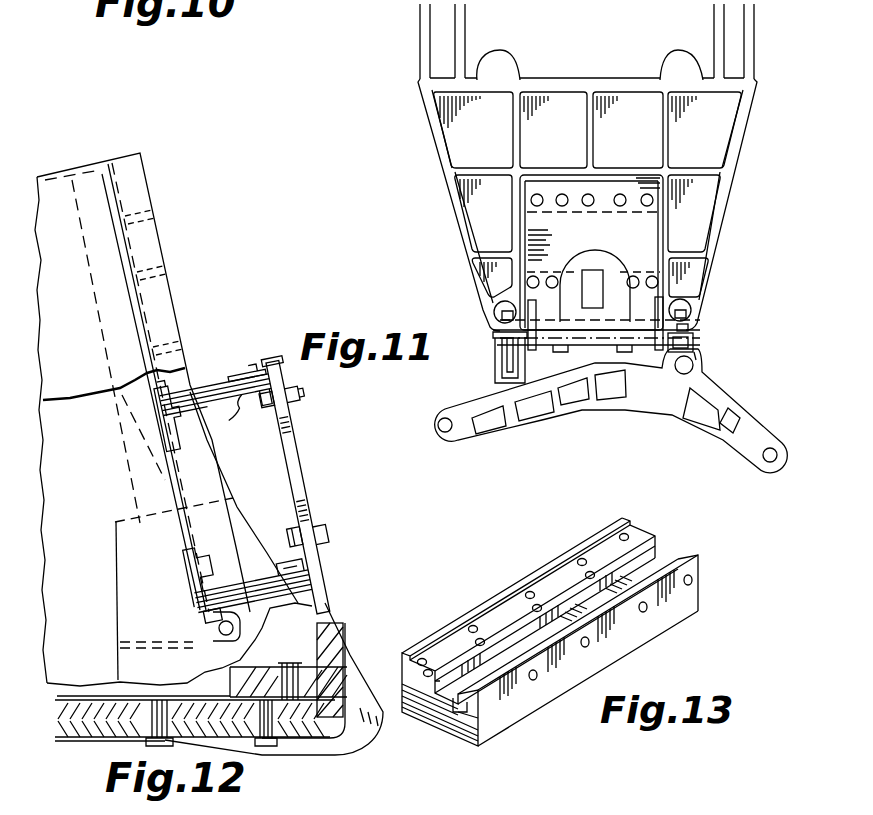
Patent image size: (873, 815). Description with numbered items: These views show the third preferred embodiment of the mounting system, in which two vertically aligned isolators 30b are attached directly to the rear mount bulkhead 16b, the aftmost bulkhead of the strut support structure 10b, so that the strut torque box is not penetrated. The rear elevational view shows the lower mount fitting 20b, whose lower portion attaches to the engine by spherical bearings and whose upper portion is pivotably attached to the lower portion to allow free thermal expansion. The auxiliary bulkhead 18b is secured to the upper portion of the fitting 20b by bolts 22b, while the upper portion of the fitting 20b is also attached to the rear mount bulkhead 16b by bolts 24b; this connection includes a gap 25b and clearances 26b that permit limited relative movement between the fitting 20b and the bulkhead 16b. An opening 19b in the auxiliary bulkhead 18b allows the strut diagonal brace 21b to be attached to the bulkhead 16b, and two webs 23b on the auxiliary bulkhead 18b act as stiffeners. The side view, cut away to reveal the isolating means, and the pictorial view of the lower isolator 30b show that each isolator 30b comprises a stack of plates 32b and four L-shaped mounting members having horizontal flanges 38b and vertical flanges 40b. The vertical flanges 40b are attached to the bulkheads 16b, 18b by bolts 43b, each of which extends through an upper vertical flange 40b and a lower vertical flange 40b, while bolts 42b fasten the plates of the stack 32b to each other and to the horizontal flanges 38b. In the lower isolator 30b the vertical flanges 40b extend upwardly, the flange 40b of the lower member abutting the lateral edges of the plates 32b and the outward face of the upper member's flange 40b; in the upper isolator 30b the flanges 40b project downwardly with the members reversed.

In FIG. 12, the strut support structure 10b is at (72, 174).
In FIG. 11, the rear mount bulkhead 16b is at (740, 142).
In FIG. 12, the rear mount bulkhead 16b is at (192, 385).
In FIG. 11, the auxiliary bulkhead 18b is at (645, 234).
In FIG. 12, the auxiliary bulkhead 18b is at (296, 467).
In FIG. 11, the opening 19b is at (672, 263).
In FIG. 12, the opening 19b is at (318, 612).
In FIG. 11, the lower mount fitting 20b is at (730, 395).
In FIG. 11, the strut diagonal brace 21b is at (594, 276).
In FIG. 11, the bolts 22b is at (625, 354).
In FIG. 12, the bolts 22b is at (150, 742).
In FIG. 11, the webs 23b is at (528, 357).
In FIG. 12, the webs 23b is at (324, 752).
In FIG. 11, the bolts 24b is at (688, 308).
In FIG. 12, the bolts 24b is at (280, 668).
In FIG. 11, the gap 25b is at (690, 328).
In FIG. 12, the gap 25b is at (47, 684).
In FIG. 11, the clearances 26b is at (692, 346).
In FIG. 12, the isolator 30b is at (243, 366).
In FIG. 13, the isolator 30b is at (707, 568).
In FIG. 12, the stack of plates 32b is at (243, 575).
In FIG. 13, the stack of plates 32b is at (480, 742).
In FIG. 12, the horizontal flanges 38b is at (217, 495).
In FIG. 13, the horizontal flanges 38b is at (630, 548).
In FIG. 11, the vertical flanges 40b is at (545, 192).
In FIG. 12, the vertical flanges 40b is at (318, 532).
In FIG. 13, the vertical flanges 40b is at (517, 582).
In FIG. 12, the bolts 42b is at (246, 368).
In FIG. 13, the bolts 42b is at (484, 640).
In FIG. 11, the bolts 43b is at (527, 281).
In FIG. 12, the bolts 43b is at (293, 395).